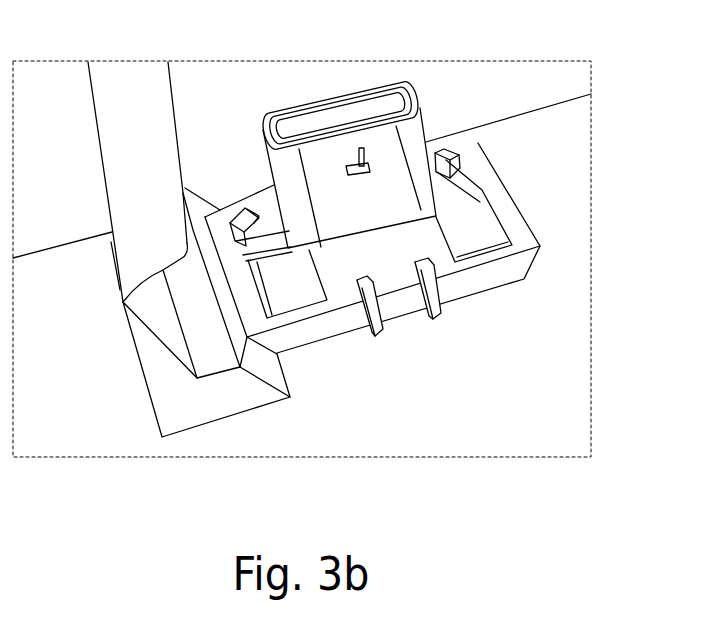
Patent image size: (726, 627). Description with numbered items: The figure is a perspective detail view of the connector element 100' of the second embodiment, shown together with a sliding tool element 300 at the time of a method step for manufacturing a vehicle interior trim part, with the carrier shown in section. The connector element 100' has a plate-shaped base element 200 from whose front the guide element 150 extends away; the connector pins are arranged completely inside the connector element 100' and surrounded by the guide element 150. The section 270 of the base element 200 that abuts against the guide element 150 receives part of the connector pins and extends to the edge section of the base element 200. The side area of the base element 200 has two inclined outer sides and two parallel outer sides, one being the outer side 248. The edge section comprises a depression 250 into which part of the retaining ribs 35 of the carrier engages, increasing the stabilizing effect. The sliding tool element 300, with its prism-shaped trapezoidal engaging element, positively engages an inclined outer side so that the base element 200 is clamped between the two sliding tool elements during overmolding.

The connector element 100' is at (302, 131).
The sliding tool element 300 is at (133, 88).
The base element 200 is at (468, 228).
The outer side 248 is at (493, 272).
The depression 250 is at (273, 186).
The guide element 150 is at (383, 187).
The section 270 is at (385, 260).
The retaining ribs 35 is at (440, 317).